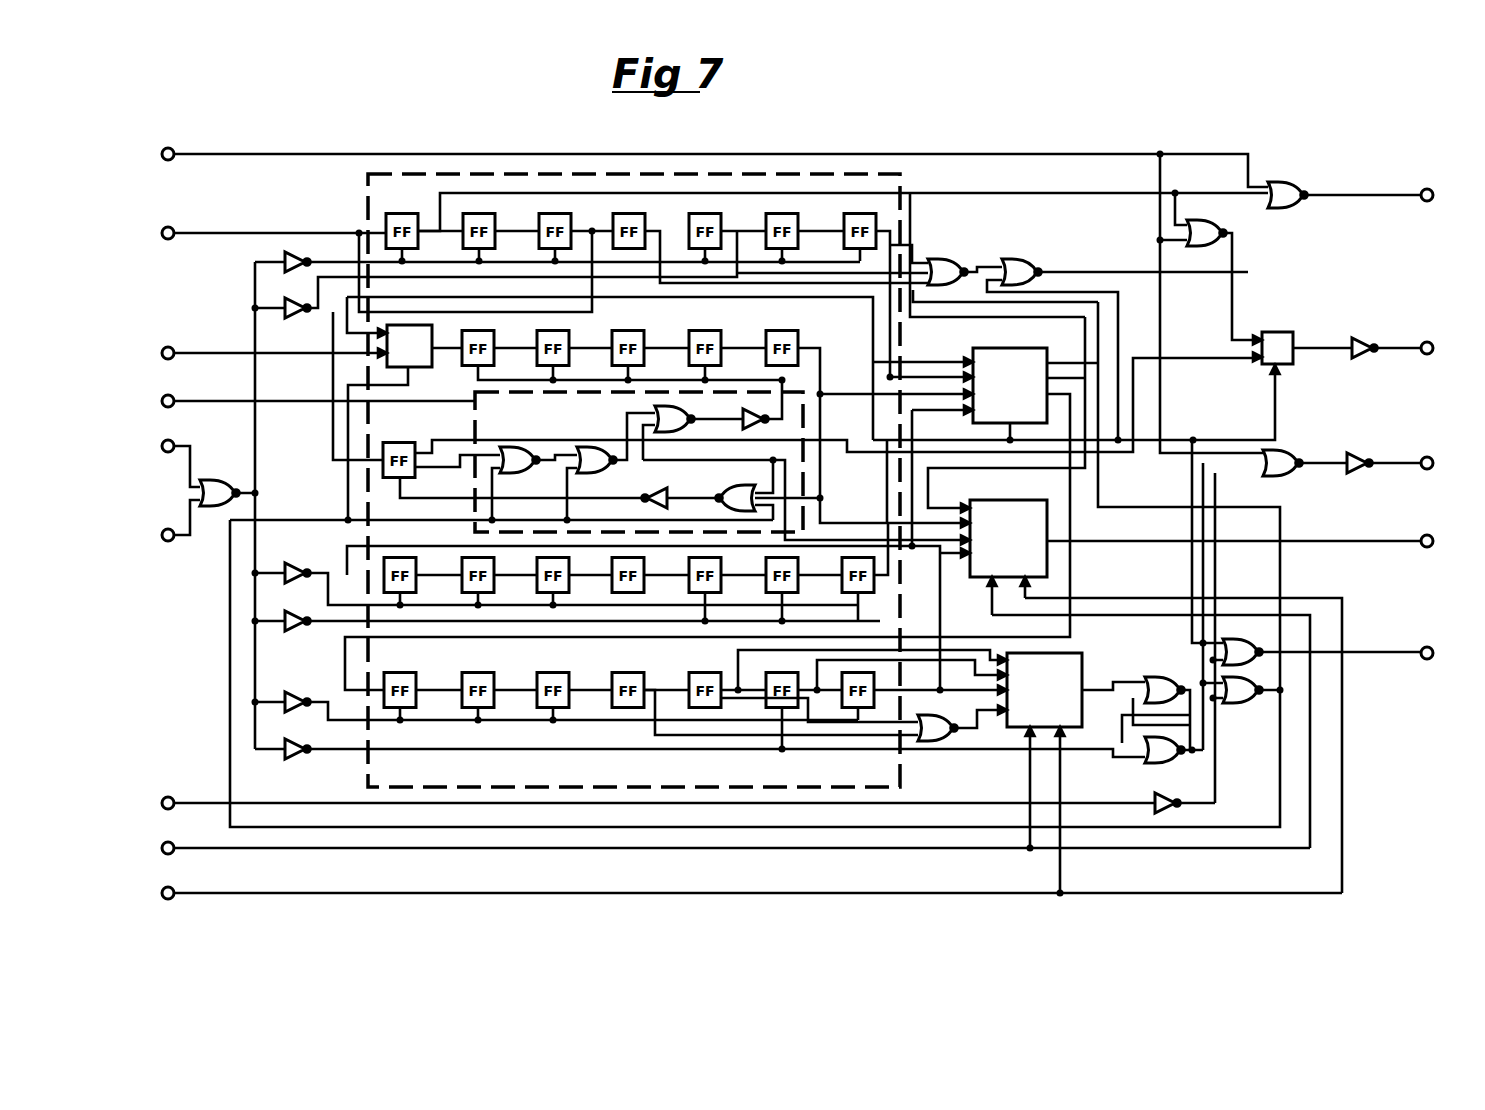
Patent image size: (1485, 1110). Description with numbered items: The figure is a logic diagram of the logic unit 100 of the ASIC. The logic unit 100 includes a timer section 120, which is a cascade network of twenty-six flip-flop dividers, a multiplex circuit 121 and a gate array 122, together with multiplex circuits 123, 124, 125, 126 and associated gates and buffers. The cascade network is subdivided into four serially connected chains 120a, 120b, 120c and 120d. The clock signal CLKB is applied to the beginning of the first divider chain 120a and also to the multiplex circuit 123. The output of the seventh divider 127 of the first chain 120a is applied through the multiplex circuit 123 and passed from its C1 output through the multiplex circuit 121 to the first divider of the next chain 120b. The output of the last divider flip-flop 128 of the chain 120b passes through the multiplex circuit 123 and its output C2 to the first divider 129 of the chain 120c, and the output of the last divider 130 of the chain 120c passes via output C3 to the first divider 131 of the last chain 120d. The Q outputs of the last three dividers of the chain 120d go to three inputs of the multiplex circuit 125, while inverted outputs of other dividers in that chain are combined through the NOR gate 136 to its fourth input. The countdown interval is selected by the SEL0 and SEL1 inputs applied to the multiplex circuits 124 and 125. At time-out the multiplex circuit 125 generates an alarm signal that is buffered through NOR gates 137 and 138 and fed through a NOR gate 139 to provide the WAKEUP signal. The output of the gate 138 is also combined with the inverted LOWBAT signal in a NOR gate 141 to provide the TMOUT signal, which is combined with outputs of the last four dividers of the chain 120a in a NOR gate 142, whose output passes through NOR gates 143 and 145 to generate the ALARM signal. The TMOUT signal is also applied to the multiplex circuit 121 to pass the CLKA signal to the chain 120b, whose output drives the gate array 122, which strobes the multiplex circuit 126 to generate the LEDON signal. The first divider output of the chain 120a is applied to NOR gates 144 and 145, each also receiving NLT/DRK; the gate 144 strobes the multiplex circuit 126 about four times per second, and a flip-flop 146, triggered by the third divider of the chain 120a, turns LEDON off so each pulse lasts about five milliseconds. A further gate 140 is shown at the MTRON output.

The logic unit 100 is at (944, 140).
The timer section 120 is at (532, 172).
The first divider chain 120a is at (650, 215).
The divider chain 120b is at (744, 335).
The divider chain 120c is at (590, 604).
The last divider chain 120d is at (594, 724).
The multiplex circuit 121 is at (418, 368).
The gate array 122 is at (476, 424).
The multiplex circuit 123 is at (1016, 348).
The multiplex circuit 124 is at (1008, 500).
The multiplex circuit 125 is at (1078, 653).
The multiplex circuit 126 is at (1284, 333).
The seventh divider 127 is at (848, 221).
The last divider flip-flop 128 is at (800, 345).
The first divider 129 is at (416, 582).
The last divider 130 is at (845, 596).
The first divider 131 is at (403, 672).
The NOR gate 136 is at (945, 716).
The NOR gate 137 is at (1150, 680).
The NOR gate 138 is at (1158, 763).
The NOR gate 139 is at (1230, 640).
The OR gate 140 is at (1285, 451).
The NOR gate 141 is at (1230, 703).
The NOR gate 142 is at (930, 259).
The NOR gate 143 is at (1010, 259).
The NOR gate 144 is at (1193, 221).
The NOR gate 145 is at (1274, 182).
The flip-flop 146 is at (401, 443).